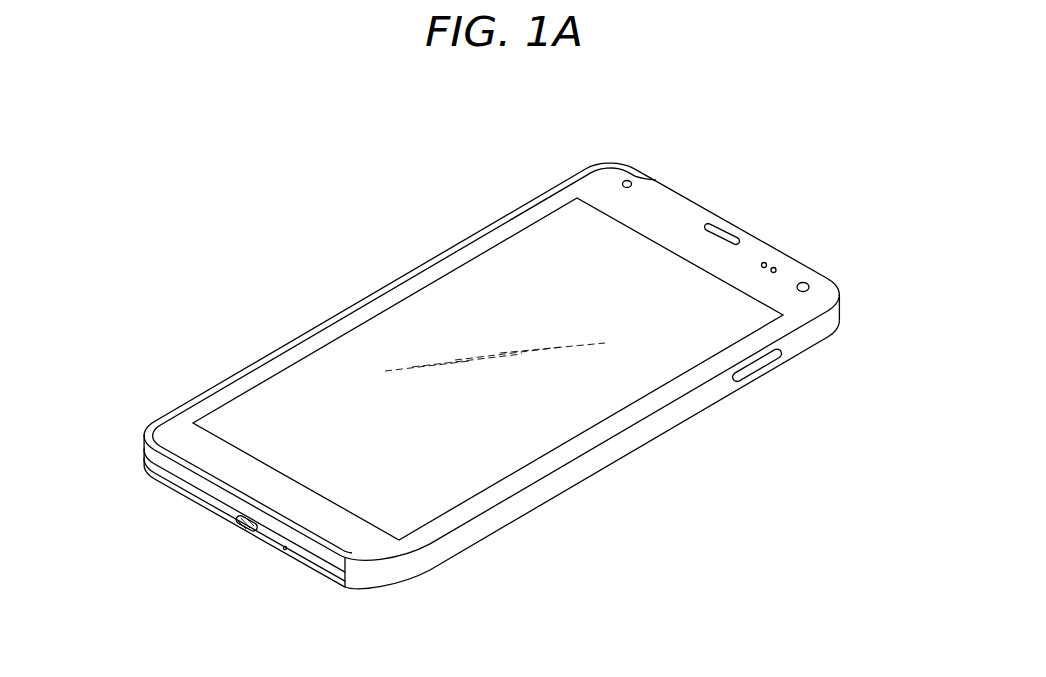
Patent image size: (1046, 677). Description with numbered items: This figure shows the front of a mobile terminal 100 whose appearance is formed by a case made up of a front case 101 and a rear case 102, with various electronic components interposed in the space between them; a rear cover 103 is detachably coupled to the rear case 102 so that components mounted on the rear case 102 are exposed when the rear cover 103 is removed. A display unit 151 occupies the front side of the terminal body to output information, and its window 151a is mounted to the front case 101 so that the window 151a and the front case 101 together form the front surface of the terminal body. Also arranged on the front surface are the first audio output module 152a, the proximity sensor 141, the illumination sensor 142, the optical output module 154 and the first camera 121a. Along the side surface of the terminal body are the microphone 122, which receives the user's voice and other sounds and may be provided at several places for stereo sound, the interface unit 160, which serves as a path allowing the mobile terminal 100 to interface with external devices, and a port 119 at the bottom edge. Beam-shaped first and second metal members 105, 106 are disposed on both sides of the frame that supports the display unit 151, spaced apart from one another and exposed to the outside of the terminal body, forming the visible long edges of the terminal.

The mobile terminal 100 is at (384, 252).
The front case 101 is at (211, 490).
The rear case 102 is at (189, 491).
The rear cover 103 is at (159, 486).
The first metal member 105 is at (332, 313).
The second metal member 106 is at (582, 469).
The interface port 119 is at (244, 537).
The first camera 121a is at (814, 283).
The microphone 122 is at (283, 553).
The proximity sensor 141 is at (778, 264).
The illumination sensor 142 is at (766, 260).
The display unit 151 is at (307, 388).
The window 151a is at (525, 270).
The first audio output module 152a is at (723, 232).
The optical output module 154 is at (634, 180).
The interface unit 160 is at (758, 369).